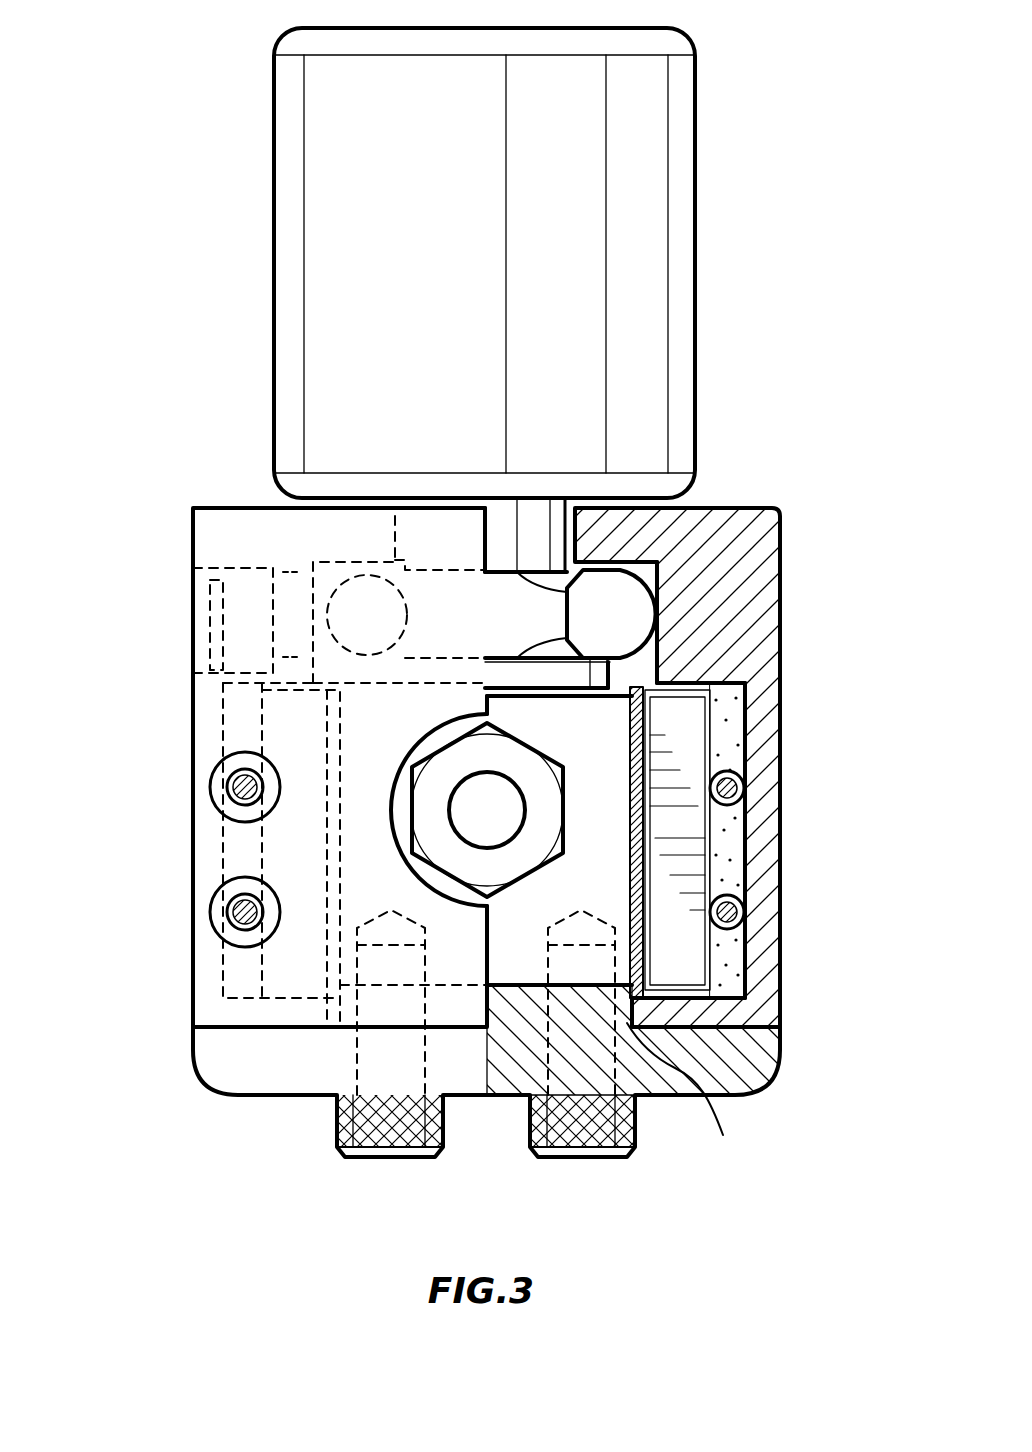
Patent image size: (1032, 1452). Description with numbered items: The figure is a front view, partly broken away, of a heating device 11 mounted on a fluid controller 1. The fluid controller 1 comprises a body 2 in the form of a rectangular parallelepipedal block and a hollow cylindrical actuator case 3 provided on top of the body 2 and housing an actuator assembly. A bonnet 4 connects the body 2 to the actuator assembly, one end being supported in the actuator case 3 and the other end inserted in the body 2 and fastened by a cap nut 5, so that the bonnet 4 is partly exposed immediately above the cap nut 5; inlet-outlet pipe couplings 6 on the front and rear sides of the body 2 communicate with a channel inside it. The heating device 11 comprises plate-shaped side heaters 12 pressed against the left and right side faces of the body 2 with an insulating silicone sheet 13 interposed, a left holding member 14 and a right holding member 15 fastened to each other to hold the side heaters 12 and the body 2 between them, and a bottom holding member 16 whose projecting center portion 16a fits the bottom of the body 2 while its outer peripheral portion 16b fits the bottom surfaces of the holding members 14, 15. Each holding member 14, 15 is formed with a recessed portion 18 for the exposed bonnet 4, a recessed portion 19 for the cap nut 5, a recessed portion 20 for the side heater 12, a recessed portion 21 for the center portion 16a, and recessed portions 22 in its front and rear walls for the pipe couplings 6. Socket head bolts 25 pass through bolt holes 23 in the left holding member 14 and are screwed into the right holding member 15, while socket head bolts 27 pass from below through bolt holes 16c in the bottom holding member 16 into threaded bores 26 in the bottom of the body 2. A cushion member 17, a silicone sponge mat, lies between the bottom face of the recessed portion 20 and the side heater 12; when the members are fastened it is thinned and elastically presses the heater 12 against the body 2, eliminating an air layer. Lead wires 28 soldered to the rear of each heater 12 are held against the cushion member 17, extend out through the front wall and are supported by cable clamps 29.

The fluid controller 1 is at (643, 97).
The body 2 is at (613, 827).
The actuator case 3 is at (637, 247).
The bonnet 4 is at (506, 520).
The cap nut 5 is at (608, 617).
The inlet-outlet pipe coupling 6 is at (535, 848).
The heating device 11 is at (763, 1107).
The side heater 12 is at (290, 735).
The insulating silicone sheet 13 is at (631, 760).
The left holding member 14 is at (193, 535).
The right holding member 15 is at (740, 508).
The bottom holding member 16 is at (300, 1072).
The center portion 16a is at (512, 1008).
The outer peripheral portion 16b is at (727, 1053).
The bolt hole 16c is at (620, 1068).
The cushion member 17 is at (222, 965).
The recessed portion 18 is at (568, 528).
The recessed portion 19 is at (660, 590).
The recessed portion 20 is at (693, 705).
The recessed portion 21 is at (694, 1090).
The recessed portion 22 is at (445, 735).
The bolt hole 23 is at (283, 572).
The socket head bolt 25 is at (240, 612).
The threaded bore 26 is at (556, 938).
The socket head bolt 27 is at (377, 1138).
The lead wire 28 is at (232, 800).
The cable clamp 29 is at (237, 803).